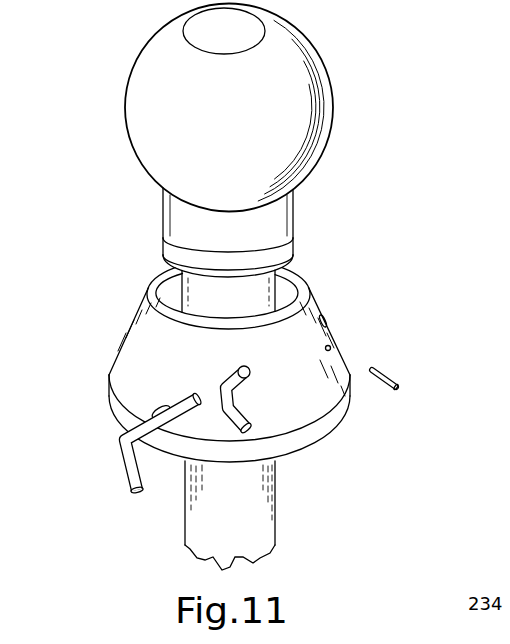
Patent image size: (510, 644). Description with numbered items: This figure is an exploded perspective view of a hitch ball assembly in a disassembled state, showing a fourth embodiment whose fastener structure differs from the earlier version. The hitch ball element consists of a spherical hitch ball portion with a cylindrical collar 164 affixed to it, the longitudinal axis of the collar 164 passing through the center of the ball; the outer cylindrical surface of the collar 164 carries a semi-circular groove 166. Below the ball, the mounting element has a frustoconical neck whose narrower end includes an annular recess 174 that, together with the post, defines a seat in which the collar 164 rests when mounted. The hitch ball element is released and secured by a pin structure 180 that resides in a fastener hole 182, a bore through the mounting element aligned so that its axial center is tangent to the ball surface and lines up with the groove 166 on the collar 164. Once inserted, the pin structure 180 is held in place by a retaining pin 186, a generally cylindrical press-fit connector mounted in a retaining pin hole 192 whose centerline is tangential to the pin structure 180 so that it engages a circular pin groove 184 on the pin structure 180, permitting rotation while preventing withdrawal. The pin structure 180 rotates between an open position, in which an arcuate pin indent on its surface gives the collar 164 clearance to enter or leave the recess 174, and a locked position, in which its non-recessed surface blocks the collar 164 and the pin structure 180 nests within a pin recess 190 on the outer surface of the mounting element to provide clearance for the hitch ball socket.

The collar 164 is at (273, 218).
The semi-circular groove 166 is at (295, 235).
The annular recess 174 is at (285, 288).
The pin structure 180 is at (107, 425).
The fastener hole 182 is at (327, 313).
The circular pin groove 184 is at (184, 406).
The retaining pin 186 is at (392, 370).
The pin recess 190 is at (233, 429).
The retaining pin hole 192 is at (331, 347).